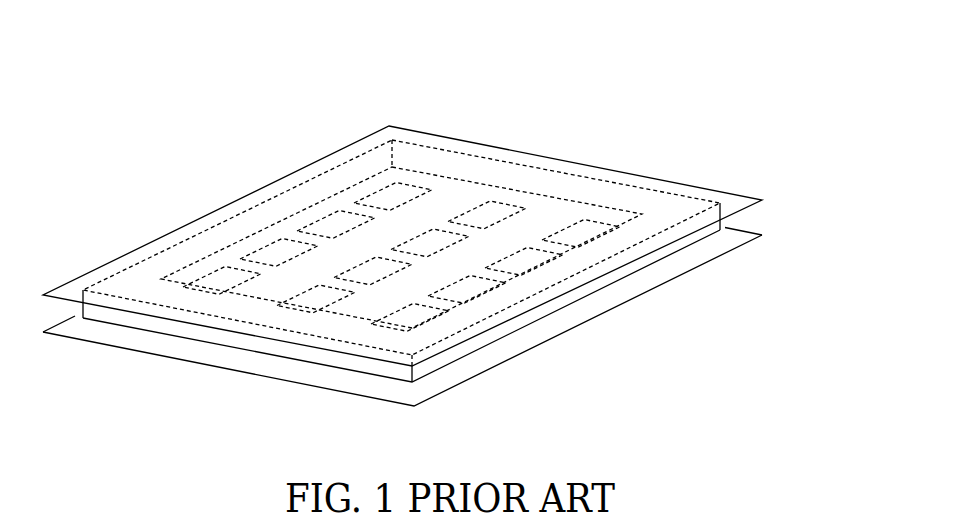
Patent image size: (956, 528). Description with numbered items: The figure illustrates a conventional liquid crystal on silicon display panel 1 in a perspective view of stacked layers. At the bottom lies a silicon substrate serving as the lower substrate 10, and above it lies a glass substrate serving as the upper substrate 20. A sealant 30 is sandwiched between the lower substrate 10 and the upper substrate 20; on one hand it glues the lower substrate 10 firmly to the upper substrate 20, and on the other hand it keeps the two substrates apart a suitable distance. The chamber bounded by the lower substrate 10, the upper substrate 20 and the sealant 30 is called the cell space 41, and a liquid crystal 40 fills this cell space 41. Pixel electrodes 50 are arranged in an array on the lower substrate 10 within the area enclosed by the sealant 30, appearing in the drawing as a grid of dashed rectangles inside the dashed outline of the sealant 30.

The liquid crystal on silicon display panel 1 is at (715, 72).
The silicon substrate 10 is at (743, 237).
The glass substrate 20 is at (733, 195).
The sealant 30 is at (645, 195).
The liquid crystal 40 is at (540, 220).
The cell space 41 is at (455, 192).
The pixel electrodes 50 is at (383, 198).